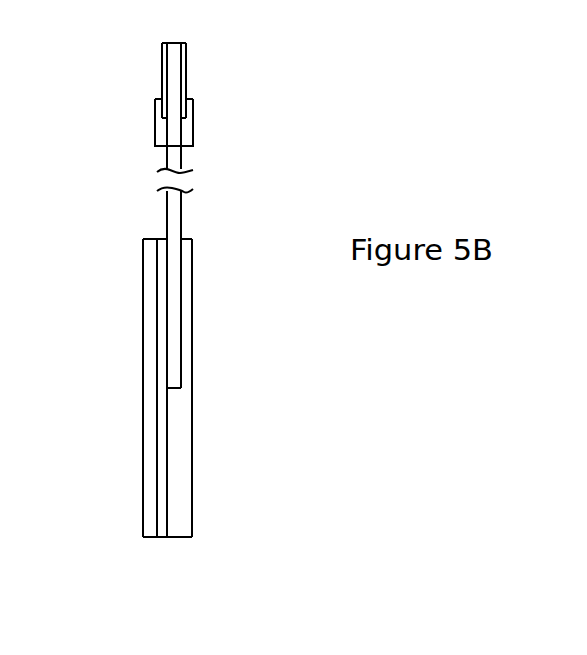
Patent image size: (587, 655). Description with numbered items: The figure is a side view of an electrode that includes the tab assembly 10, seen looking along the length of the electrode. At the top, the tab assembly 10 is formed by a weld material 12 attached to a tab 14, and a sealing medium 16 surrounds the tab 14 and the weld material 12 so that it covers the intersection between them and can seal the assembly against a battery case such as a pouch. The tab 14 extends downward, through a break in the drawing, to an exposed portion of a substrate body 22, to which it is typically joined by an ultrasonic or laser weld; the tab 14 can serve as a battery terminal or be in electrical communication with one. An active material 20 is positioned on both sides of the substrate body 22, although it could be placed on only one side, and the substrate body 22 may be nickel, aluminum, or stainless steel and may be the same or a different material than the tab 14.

The tab assembly 10 is at (112, 108).
The weld material 12 is at (162, 60).
The tab 14 is at (167, 219).
The sealing medium 16 is at (195, 124).
The active material 20 is at (148, 453).
The substrate body 22 is at (163, 528).